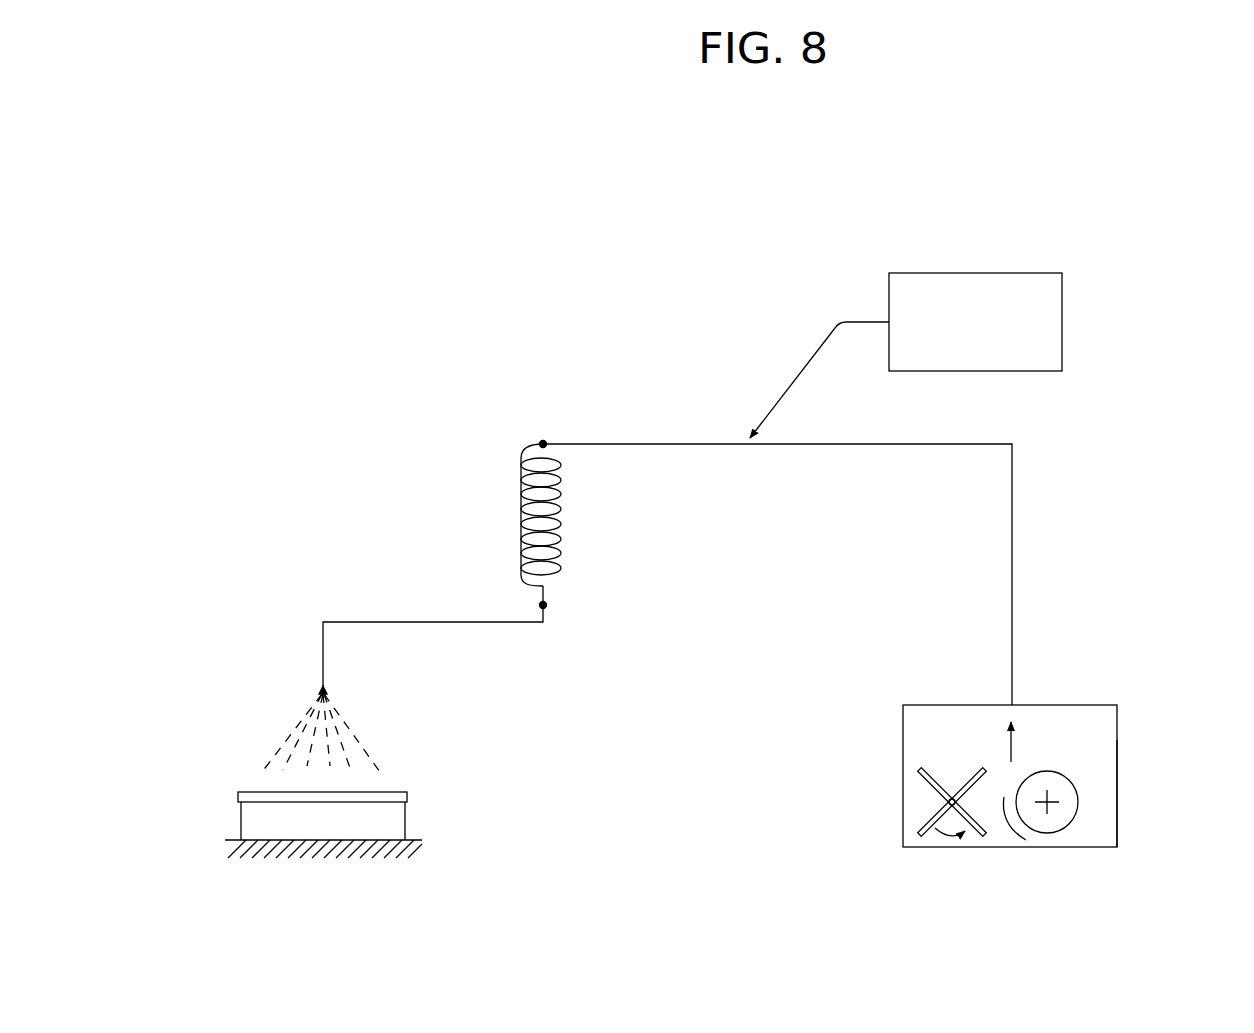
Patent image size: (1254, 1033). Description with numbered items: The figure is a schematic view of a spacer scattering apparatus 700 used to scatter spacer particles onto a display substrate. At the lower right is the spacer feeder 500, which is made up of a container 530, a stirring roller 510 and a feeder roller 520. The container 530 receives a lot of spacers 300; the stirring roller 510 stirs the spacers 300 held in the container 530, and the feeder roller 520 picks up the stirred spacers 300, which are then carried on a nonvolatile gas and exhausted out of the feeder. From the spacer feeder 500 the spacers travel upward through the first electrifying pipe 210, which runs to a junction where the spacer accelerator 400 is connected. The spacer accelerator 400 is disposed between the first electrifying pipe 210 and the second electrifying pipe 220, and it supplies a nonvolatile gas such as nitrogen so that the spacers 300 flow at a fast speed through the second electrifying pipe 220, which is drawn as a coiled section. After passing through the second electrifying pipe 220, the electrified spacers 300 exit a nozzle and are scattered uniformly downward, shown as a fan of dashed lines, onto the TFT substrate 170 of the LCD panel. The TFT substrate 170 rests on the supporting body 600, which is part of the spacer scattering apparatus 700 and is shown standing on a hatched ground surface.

The spacer scattering apparatus 700 is at (1156, 206).
The spacer accelerator 400 is at (987, 264).
The first electrifying pipe 210 is at (1013, 530).
The second electrifying pipe 220 is at (511, 506).
The spacer 300 is at (343, 705).
The TFT substrate 170 is at (240, 795).
The supporting body 600 is at (393, 812).
The spacer feeder 500 is at (1137, 702).
The stirring roller 510 is at (925, 783).
The feeder roller 520 is at (1074, 810).
The container 530 is at (1118, 780).